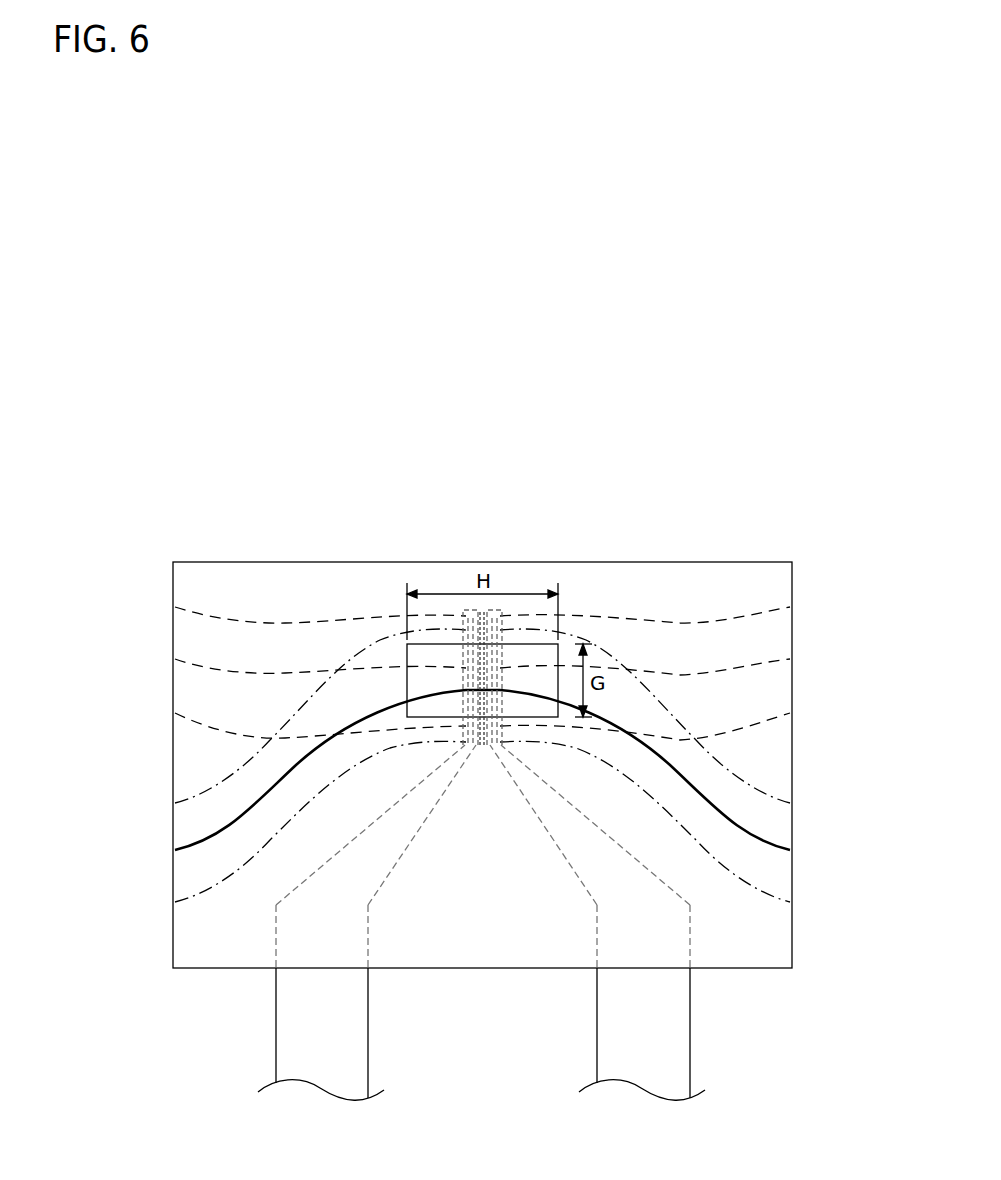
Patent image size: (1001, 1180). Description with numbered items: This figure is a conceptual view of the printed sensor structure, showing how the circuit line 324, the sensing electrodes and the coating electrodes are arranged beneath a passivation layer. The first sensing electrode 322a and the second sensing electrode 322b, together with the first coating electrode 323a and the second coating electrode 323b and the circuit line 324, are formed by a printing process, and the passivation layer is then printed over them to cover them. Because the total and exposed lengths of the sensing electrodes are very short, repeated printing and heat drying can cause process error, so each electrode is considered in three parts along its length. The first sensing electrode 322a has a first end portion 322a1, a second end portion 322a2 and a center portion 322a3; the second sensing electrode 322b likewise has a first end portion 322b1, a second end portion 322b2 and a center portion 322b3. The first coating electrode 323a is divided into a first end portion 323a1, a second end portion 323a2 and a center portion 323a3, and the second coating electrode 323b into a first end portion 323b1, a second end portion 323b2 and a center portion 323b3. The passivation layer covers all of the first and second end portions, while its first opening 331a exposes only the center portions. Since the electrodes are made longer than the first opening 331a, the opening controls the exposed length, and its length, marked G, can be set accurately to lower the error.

The first sensing electrode 322a is at (245, 661).
The first end portion of the first sensing electrode 322a1 is at (280, 716).
The second end portion of the first sensing electrode 322a2 is at (175, 607).
The center portion of the first sensing electrode 322a3 is at (175, 659).
The second sensing electrode 322b is at (721, 662).
The first end portion of the second sensing electrode 322b1 is at (686, 717).
The second end portion of the second sensing electrode 322b2 is at (790, 607).
The center portion of the second sensing electrode 322b3 is at (790, 659).
The first coating electrode 323a is at (262, 776).
The first end portion of the first coating electrode 323a1 is at (80, 787).
The second end portion of the first coating electrode 323a2 is at (175, 803).
The center portion of the first coating electrode 323a3 is at (175, 850).
The second coating electrode 323b is at (721, 776).
The first end portion of the second coating electrode 323b1 is at (880, 787).
The second end portion of the second coating electrode 323b2 is at (790, 803).
The center portion of the second coating electrode 323b3 is at (790, 850).
The first opening 331a is at (536, 648).
The circuit line 324 is at (308, 1023).